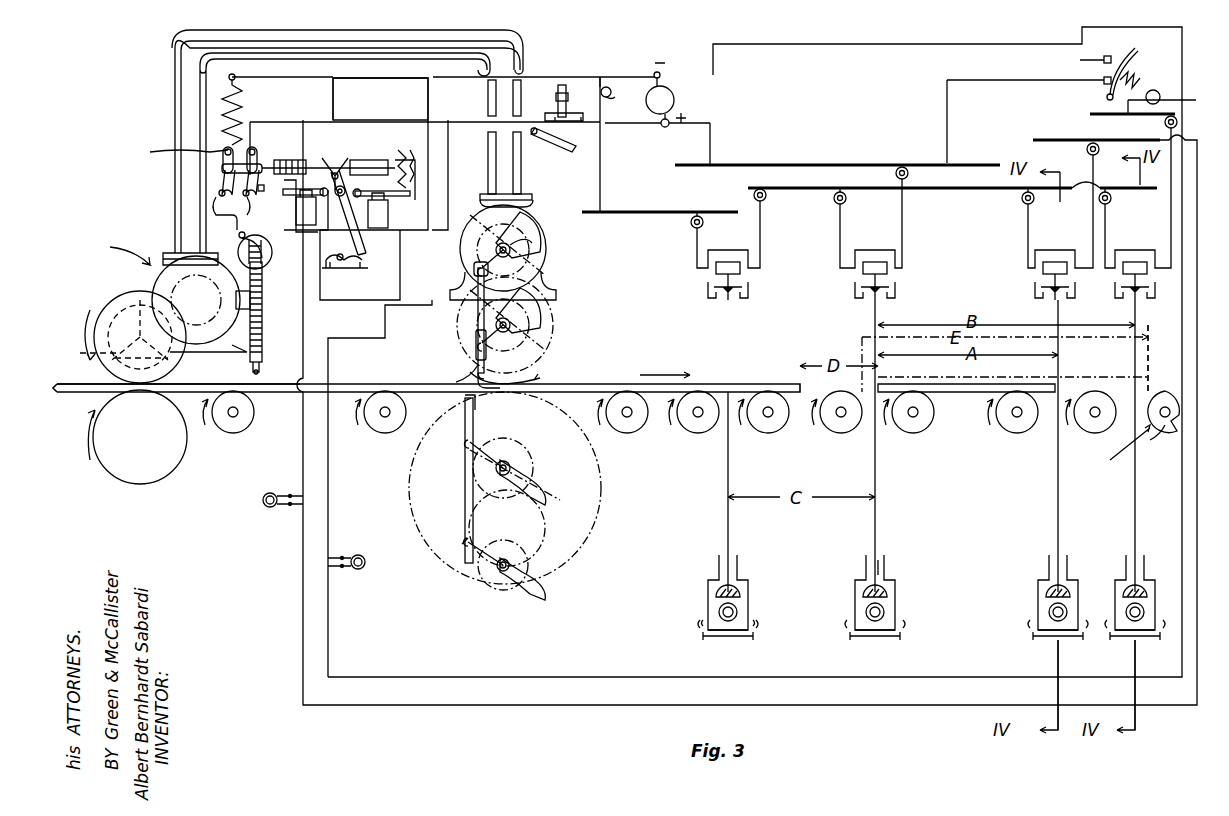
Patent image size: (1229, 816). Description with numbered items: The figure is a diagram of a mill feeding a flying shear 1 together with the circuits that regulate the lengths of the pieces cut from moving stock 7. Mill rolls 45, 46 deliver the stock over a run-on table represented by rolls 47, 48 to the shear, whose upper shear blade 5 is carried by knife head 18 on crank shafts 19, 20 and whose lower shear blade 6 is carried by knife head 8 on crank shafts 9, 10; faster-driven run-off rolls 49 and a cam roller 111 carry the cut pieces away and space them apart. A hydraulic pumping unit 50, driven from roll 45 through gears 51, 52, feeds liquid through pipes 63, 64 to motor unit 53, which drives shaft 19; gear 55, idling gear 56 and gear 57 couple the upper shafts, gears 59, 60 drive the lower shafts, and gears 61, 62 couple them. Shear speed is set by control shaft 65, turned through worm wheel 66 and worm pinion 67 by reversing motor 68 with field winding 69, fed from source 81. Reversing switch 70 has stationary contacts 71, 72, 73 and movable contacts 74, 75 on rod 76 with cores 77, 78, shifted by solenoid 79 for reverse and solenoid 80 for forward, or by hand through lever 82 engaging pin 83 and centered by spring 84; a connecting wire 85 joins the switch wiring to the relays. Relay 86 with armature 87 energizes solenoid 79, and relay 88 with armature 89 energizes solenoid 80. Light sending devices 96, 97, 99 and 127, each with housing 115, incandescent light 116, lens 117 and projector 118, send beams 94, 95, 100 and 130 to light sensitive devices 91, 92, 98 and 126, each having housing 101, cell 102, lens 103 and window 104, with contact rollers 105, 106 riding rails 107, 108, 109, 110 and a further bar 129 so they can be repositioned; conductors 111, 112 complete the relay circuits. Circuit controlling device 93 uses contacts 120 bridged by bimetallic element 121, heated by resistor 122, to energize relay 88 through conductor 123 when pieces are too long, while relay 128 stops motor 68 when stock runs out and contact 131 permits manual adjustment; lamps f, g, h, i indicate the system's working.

The flying shear 1 is at (444, 359).
The upper shear blade 5 is at (470, 366).
The lower shear blade 6 is at (476, 414).
The stock 7 is at (352, 385).
The knife head 8 is at (465, 488).
The crank shaft 9 is at (512, 462).
The crank shaft 10 is at (530, 540).
The knife head 18 is at (478, 318).
The crank shaft 19 is at (510, 255).
The crank shaft 20 is at (510, 318).
The mill roll 45 is at (140, 300).
The mill roll 46 is at (95, 462).
The roll 47 is at (225, 432).
The roll 48 is at (376, 428).
The rolls 49 is at (643, 430).
The pumping unit 50 is at (116, 248).
The gear 51 is at (85, 356).
The gear 52 is at (150, 270).
The receiving unit or motor 53 is at (554, 246).
The gear 55 is at (528, 222).
The idling gear 56 is at (530, 282).
The gear 57 is at (540, 350).
The gear 59 is at (550, 320).
The gear 60 is at (600, 484).
The gear 61 is at (510, 448).
The gear 62 is at (540, 496).
The pipe 63 is at (175, 57).
The pipe 64 is at (200, 90).
The control shaft 65 is at (262, 312).
The worm wheel 66 is at (260, 366).
The worm pinion 67 is at (239, 243).
The reversing motor 68 is at (242, 255).
The series field winding 69 is at (243, 109).
The reversing switch 70 is at (380, 99).
The stationary contact member 71 is at (231, 213).
The stationary contact member 72 is at (231, 189).
The stationary contact member 73 is at (258, 183).
The movable contact member 74 is at (176, 151).
The movable contact member 75 is at (258, 158).
The rod 76 is at (365, 158).
The core 77 is at (305, 155).
The core 78 is at (403, 155).
The solenoid 79 is at (290, 155).
The solenoid 80 is at (412, 170).
The source of power 81 is at (675, 96).
The lever 82 is at (344, 212).
The pin 83 is at (328, 163).
The tension spring 84 is at (345, 275).
The wire 85 is at (306, 216).
The relay 86 is at (304, 216).
The armature 87 is at (305, 185).
The relay 88 is at (374, 221).
The armature 89 is at (381, 187).
The light sensitive device 91 is at (871, 244).
The light sensitive device 92 is at (1138, 244).
The circuit controlling device 93 is at (1160, 88).
The light beam 94 is at (877, 519).
The light beam 95 is at (1135, 505).
The light sending device 96 is at (855, 592).
The light sending device 97 is at (1126, 589).
The light sensitive device 98 is at (1041, 261).
The light emitting device 99 is at (1040, 592).
The light beam 100 is at (1058, 495).
The housing 101 is at (889, 288).
The light sensitive cell 102 is at (730, 262).
The lens 103 is at (742, 289).
The window 104 is at (870, 302).
The contact roller 105 is at (691, 223).
The contact roller 106 is at (754, 195).
The rail 107 is at (812, 165).
The rail 108 is at (805, 196).
The rail 109 is at (1064, 138).
The rail 110 is at (1100, 112).
The conductor 111 is at (1182, 432).
The conductor 112 is at (462, 255).
The housing 115 is at (740, 580).
The incandescent light 116 is at (737, 608).
The lens 117 is at (716, 594).
The projector 118 is at (884, 570).
The contact members 120 is at (1100, 75).
The bimetallic temperature responsive element 121 is at (1160, 47).
The resistor 122 is at (1140, 75).
The conductor 123 is at (1175, 336).
The light sensitive device 126 is at (704, 261).
The light emitting device 127 is at (702, 592).
The relay 128 is at (550, 96).
The bus bar 129 is at (632, 212).
The light beam 130 is at (728, 523).
The movable contact member 131 is at (556, 150).
The light f is at (268, 508).
The light g is at (366, 562).
The light h is at (1168, 100).
The light i is at (613, 93).